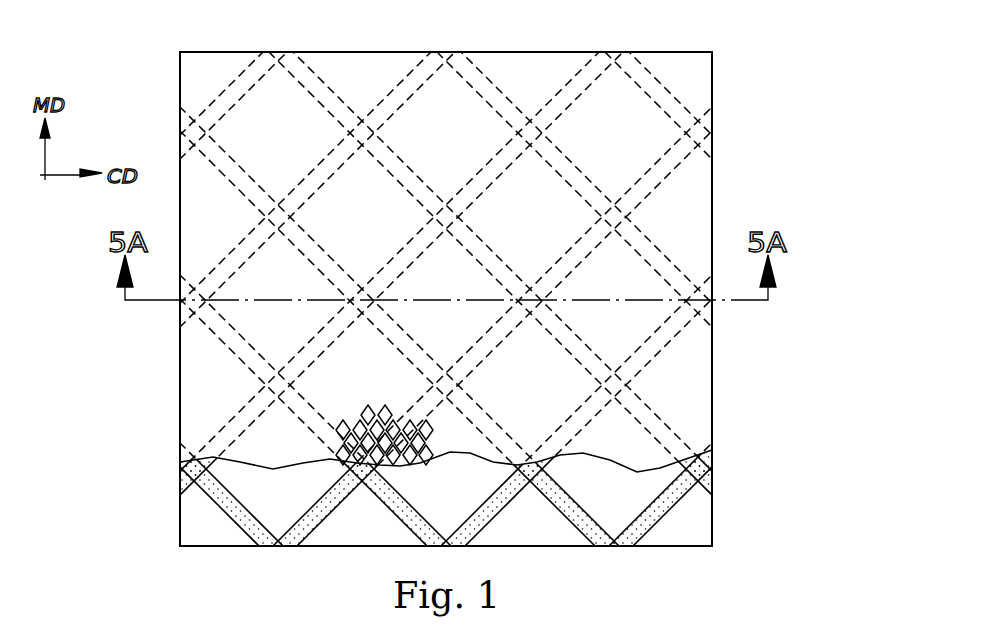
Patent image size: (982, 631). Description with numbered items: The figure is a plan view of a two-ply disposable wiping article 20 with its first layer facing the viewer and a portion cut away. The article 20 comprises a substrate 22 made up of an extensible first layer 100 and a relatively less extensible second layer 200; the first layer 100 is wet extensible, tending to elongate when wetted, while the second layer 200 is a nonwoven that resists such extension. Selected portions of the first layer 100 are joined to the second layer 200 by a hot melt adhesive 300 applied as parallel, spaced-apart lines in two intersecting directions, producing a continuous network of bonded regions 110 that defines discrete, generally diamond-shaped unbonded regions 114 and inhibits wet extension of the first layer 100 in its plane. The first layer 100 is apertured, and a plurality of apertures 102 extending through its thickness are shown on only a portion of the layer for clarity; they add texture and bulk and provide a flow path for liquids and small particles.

The disposable wiping article 20 is at (760, 75).
The substrate 22 is at (730, 169).
The first layer 100 is at (697, 427).
The apertures 102 is at (373, 464).
The bonded regions 110 is at (492, 92).
The unbonded regions 114 is at (425, 108).
The second layer 200 is at (685, 505).
The adhesive 300 is at (600, 533).